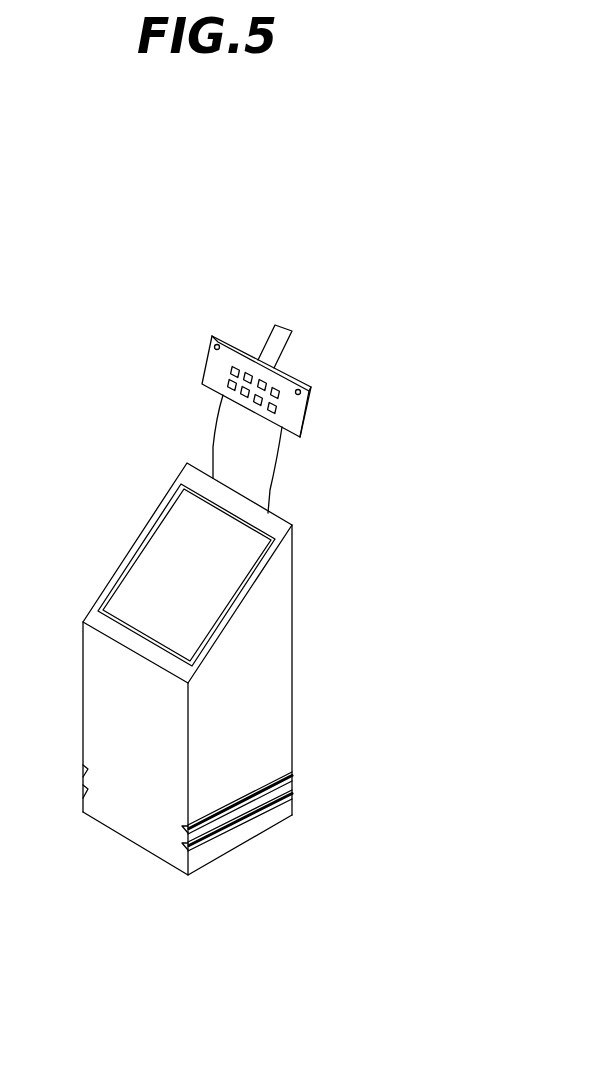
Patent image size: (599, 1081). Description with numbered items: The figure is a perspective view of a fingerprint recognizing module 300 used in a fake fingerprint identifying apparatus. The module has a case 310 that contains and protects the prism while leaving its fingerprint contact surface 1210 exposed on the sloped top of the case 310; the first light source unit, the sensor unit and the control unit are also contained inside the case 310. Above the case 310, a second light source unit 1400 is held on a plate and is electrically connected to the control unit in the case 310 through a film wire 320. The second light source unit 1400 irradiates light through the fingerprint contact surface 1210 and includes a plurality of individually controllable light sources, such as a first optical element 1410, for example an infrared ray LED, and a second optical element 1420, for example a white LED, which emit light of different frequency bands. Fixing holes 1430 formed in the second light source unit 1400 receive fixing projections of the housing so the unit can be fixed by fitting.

The fingerprint recognizing module 300 is at (145, 253).
The case 310 is at (277, 703).
The film wire 320 is at (228, 448).
The fingerprint contact surface 1210 is at (163, 558).
The second light source unit 1400 is at (421, 373).
The first optical element 1410 is at (277, 411).
The second optical element 1420 is at (279, 395).
The fixing holes 1430 is at (221, 347).